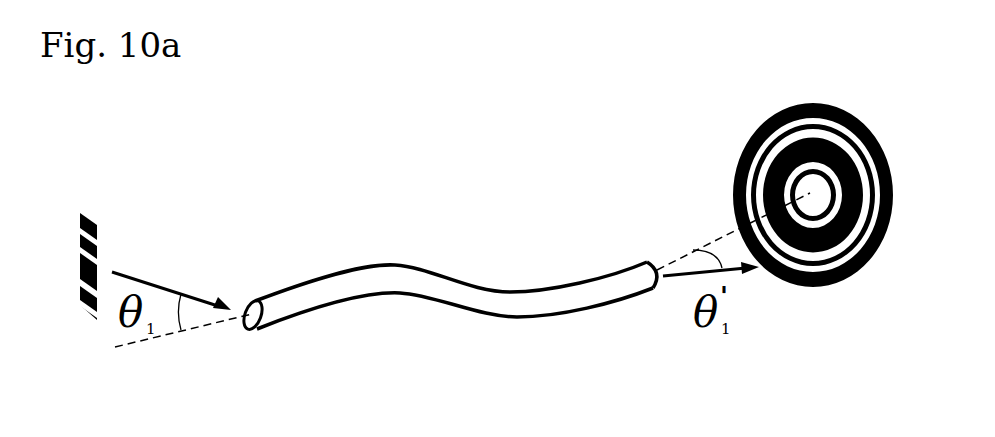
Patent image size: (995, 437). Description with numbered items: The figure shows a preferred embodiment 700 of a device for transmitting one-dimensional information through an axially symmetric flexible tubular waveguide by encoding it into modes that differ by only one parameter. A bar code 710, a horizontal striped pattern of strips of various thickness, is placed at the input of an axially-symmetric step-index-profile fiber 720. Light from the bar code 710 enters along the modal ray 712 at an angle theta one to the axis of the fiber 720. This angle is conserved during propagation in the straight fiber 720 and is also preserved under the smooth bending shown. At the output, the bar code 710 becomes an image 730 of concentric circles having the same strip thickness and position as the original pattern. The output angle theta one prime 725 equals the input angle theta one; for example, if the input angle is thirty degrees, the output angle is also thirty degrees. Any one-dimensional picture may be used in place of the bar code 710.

The preferred embodiment 700 is at (381, 129).
The bar code 710 is at (100, 232).
The modal ray 712 is at (155, 285).
The axially-symmetric step-index-profile fiber 720 is at (350, 288).
The output angle theta one prime 725 is at (683, 277).
The image of concentric circles 730 is at (767, 167).